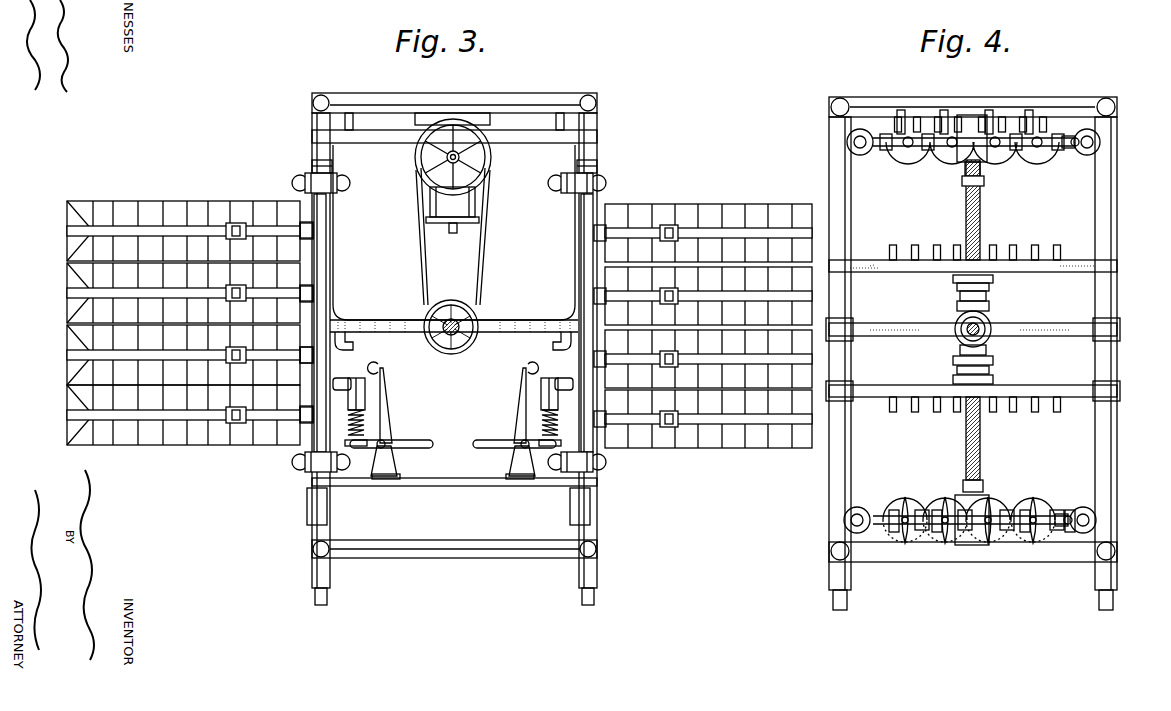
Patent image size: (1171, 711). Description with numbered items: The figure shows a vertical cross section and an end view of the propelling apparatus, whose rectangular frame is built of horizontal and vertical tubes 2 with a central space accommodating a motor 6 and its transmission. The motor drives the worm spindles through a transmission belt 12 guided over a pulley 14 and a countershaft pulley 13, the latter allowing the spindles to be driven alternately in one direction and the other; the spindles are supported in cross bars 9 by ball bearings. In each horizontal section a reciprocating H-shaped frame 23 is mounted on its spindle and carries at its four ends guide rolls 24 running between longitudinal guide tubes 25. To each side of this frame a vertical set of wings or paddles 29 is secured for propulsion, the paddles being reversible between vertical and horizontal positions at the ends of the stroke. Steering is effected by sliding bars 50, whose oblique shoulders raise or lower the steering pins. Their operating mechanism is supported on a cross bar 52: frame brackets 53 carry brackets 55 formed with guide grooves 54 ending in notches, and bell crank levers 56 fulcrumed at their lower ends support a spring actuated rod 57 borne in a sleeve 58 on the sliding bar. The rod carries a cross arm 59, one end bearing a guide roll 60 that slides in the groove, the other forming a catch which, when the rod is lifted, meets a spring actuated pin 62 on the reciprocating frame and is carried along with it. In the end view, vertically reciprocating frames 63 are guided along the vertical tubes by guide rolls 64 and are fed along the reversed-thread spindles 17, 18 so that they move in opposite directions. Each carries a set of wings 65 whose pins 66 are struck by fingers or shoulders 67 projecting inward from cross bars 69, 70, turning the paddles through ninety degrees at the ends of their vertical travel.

In FIG. 3, the vertical tubes 2 is at (312, 134).
In FIG. 4, the vertical tubes 2 is at (840, 218).
In FIG. 3, the motor 6 is at (472, 200).
In FIG. 4, the cross bars 9 is at (872, 330).
In FIG. 3, the transmission belt 12 is at (486, 248).
In FIG. 3, the countershaft pulley 13 is at (451, 300).
In FIG. 3, the pulley 14 is at (490, 157).
In FIG. 4, the spindle 17 is at (982, 204).
In FIG. 4, the spindle 18 is at (981, 452).
In FIG. 3, the reciprocating H-shaped frame 23 is at (325, 266).
In FIG. 3, the guide rolls 24 is at (334, 176).
In FIG. 3, the longitudinal guide tubes 25 is at (297, 182).
In FIG. 3, the wings or paddles 29 is at (652, 215).
In FIG. 3, the sliding bars 50 is at (454, 396).
In FIG. 3, the cross bar 52 is at (432, 486).
In FIG. 3, the frame brackets 53 is at (404, 432).
In FIG. 3, the guide grooves or channels 54 is at (382, 370).
In FIG. 3, the brackets 55 is at (388, 440).
In FIG. 3, the bell crank levers 56 is at (483, 448).
In FIG. 3, the spring actuated rod 57 is at (368, 420).
In FIG. 3, the sleeve 58 is at (367, 392).
In FIG. 3, the cross arm 59 is at (556, 376).
In FIG. 3, the guide roll 60 is at (540, 386).
In FIG. 3, the spring actuated pin 62 is at (345, 334).
In FIG. 4, the vertically reciprocating frames 63 is at (884, 130).
In FIG. 4, the guide rolls 64 is at (847, 140).
In FIG. 4, the wings 65 is at (1070, 130).
In FIG. 4, the pins 66 is at (988, 110).
In FIG. 4, the fingers or shoulders 67 is at (950, 128).
In FIG. 4, the cross bars 69 is at (1010, 120).
In FIG. 4, the cross bars 70 is at (860, 398).